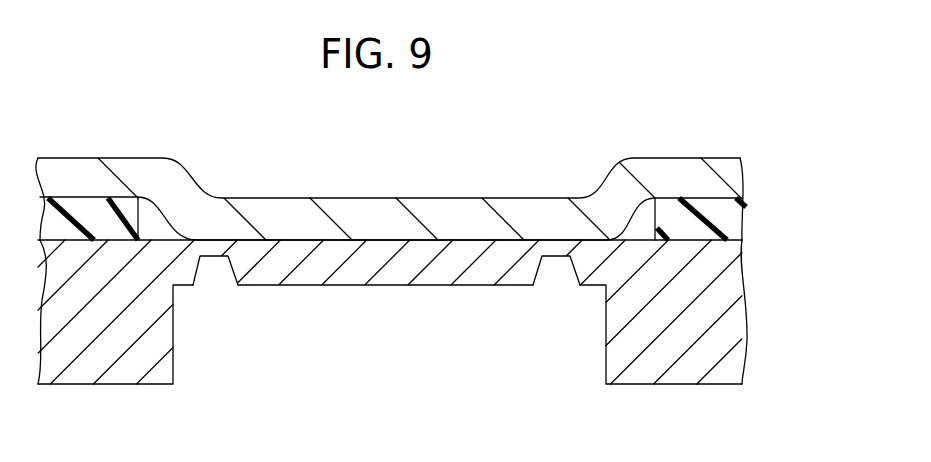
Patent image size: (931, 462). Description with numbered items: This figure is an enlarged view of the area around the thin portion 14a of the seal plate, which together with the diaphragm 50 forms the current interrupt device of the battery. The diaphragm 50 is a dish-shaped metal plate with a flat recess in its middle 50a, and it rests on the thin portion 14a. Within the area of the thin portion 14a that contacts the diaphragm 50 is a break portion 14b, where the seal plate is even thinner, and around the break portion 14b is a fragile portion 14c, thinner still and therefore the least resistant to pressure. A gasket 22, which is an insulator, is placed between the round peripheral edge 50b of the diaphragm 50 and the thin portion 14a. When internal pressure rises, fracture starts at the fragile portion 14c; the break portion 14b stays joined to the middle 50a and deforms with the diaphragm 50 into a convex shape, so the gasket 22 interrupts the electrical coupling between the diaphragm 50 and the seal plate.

The thin portion 14a is at (745, 303).
The break portion 14b is at (402, 263).
The fragile portion 14c is at (220, 270).
The gasket 22 is at (723, 220).
The diaphragm 50 is at (733, 176).
The middle 50a is at (403, 220).
The round peripheral edge 50b is at (83, 173).